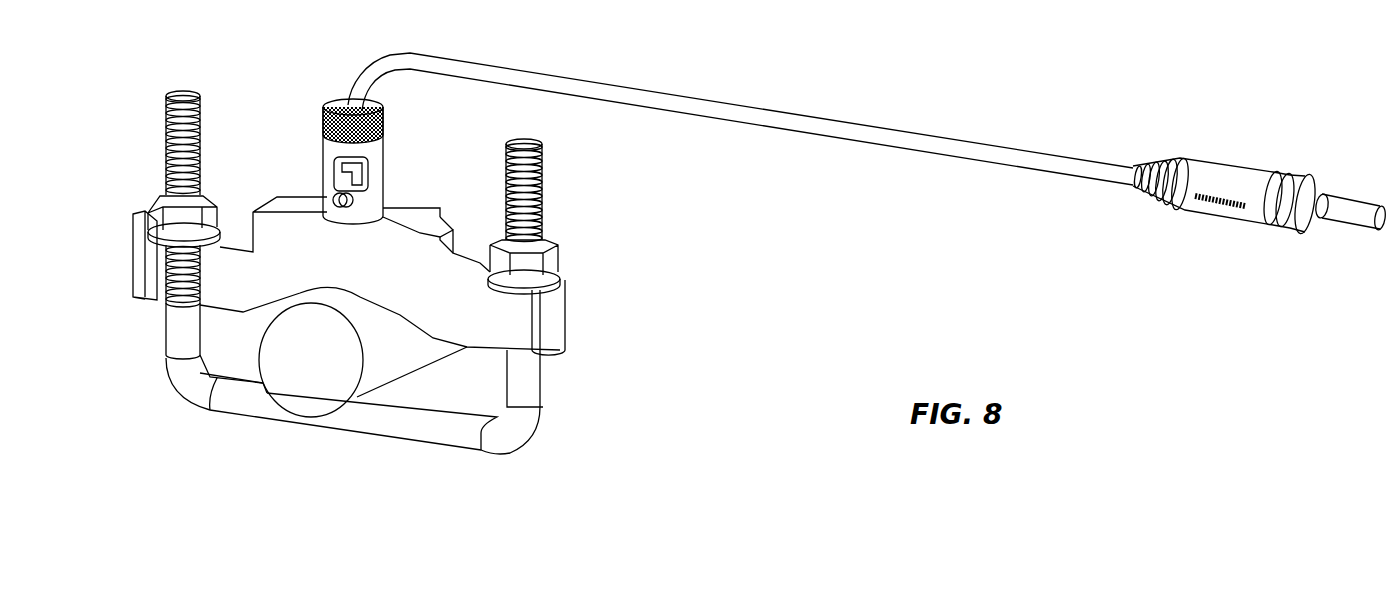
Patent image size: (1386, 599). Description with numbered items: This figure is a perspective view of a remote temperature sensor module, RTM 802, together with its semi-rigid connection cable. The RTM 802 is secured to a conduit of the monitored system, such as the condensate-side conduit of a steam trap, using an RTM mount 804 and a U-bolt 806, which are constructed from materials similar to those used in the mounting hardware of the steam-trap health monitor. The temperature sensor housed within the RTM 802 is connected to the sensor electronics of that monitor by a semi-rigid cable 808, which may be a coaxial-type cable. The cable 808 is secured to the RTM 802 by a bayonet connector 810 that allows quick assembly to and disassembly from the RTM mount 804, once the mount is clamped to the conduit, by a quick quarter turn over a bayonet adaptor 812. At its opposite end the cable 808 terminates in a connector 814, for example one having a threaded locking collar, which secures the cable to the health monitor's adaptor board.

The remote temperature sensor module 802 is at (117, 157).
The RTM mount 804 is at (553, 317).
The U-bolt 806 is at (525, 433).
The semi-rigid cable 808 is at (843, 143).
The bayonet connector 810 is at (383, 125).
The bayonet adaptor 812 is at (332, 193).
The connector 814 is at (1208, 172).